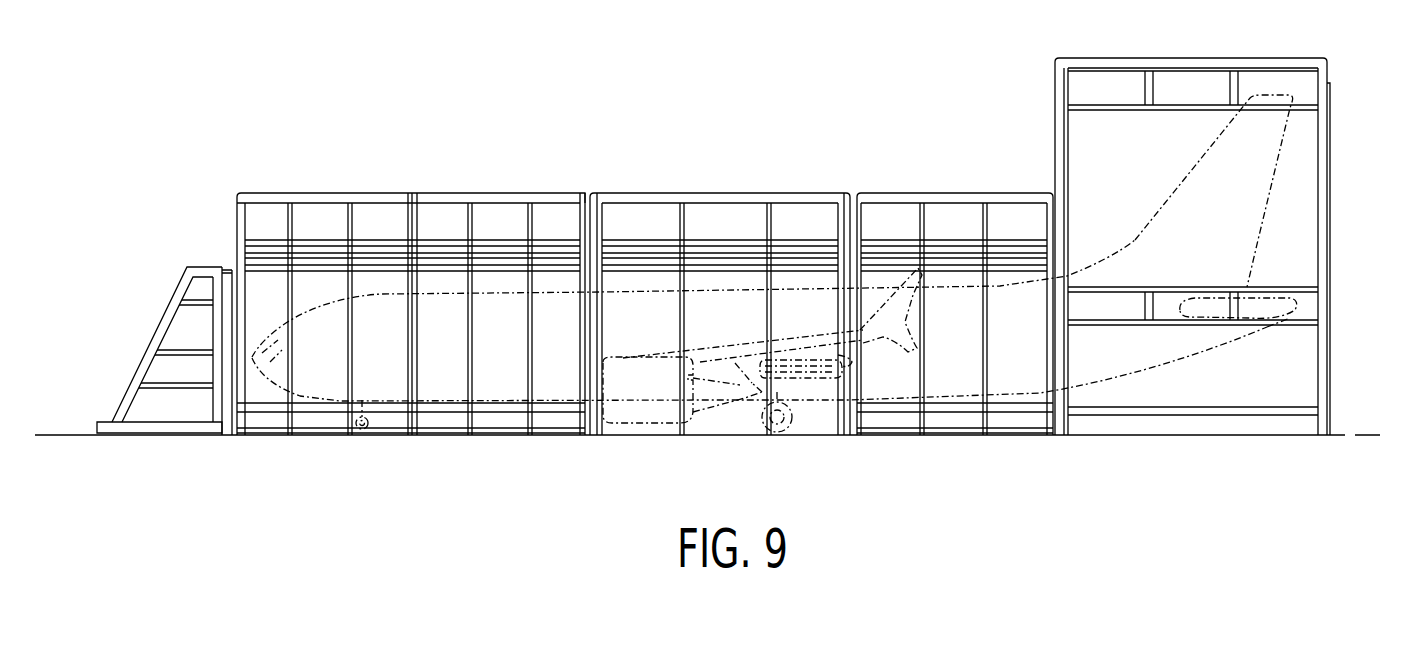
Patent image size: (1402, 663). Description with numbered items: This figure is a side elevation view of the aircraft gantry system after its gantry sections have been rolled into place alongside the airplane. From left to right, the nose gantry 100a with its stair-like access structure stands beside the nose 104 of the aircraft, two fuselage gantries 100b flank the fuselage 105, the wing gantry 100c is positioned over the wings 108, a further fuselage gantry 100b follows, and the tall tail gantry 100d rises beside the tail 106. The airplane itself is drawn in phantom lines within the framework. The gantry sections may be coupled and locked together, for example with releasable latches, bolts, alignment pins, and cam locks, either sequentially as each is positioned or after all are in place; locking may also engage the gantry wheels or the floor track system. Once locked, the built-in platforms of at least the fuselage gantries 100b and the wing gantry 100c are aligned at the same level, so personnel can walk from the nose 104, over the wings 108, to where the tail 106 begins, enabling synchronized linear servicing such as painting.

The nose gantry 100a is at (142, 370).
The fuselage gantry 100b is at (320, 192).
The wing gantry 100c is at (728, 192).
The tail gantry 100d is at (1211, 58).
The nose 104 is at (273, 363).
The fuselage 105 is at (927, 373).
The tail 106 is at (1265, 262).
The wings 108 is at (747, 380).